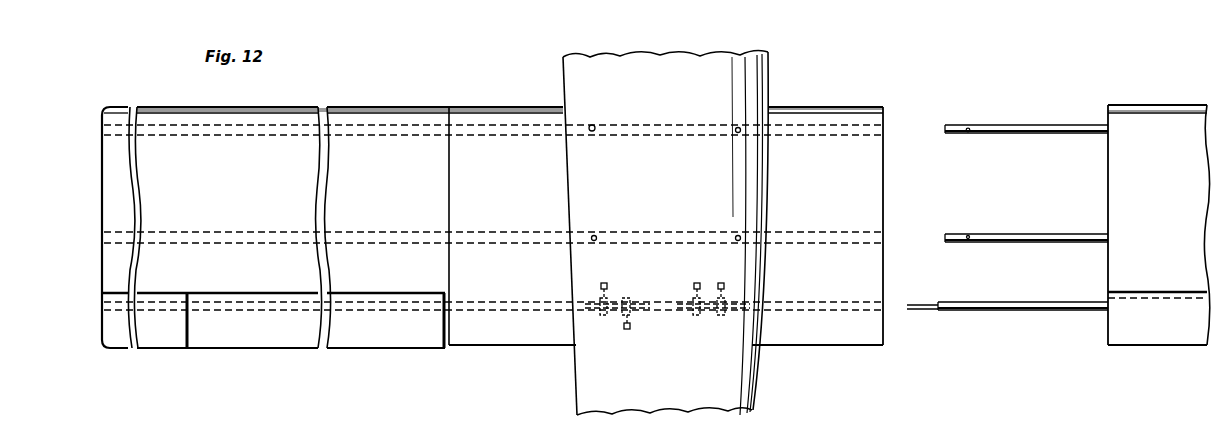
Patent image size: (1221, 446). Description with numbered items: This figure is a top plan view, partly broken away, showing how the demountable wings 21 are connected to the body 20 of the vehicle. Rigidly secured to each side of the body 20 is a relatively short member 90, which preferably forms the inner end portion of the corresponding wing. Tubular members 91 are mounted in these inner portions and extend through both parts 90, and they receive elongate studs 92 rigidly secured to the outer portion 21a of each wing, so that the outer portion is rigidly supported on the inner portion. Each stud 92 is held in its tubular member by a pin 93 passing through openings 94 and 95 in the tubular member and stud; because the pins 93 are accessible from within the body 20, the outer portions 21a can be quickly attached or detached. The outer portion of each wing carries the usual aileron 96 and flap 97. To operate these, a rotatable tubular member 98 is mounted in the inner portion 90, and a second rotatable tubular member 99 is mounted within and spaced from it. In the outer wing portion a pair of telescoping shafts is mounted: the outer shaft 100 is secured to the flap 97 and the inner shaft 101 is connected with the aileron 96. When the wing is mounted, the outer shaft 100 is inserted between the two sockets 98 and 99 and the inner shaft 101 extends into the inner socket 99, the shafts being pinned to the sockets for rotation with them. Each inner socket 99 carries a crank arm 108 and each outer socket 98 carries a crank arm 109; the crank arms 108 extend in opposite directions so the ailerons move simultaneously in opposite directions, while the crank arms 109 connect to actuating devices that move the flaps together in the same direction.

The body 20 is at (742, 392).
The wings 21 is at (474, 102).
The outer portion of wing 21a is at (407, 118).
The member 90 is at (875, 195).
The tubular members 91 is at (468, 132).
The studs 92 is at (1018, 125).
The pins 93 is at (593, 133).
The openings 94 is at (738, 134).
The openings 95 is at (968, 128).
The aileron 96 is at (168, 340).
The flap 97 is at (395, 338).
The tubular member 98 is at (515, 306).
The second tubular member 99 is at (610, 300).
The outer shaft 100 is at (990, 310).
The inner shaft 101 is at (925, 305).
The crank arm 108 is at (631, 325).
The crank arm 109 is at (610, 284).